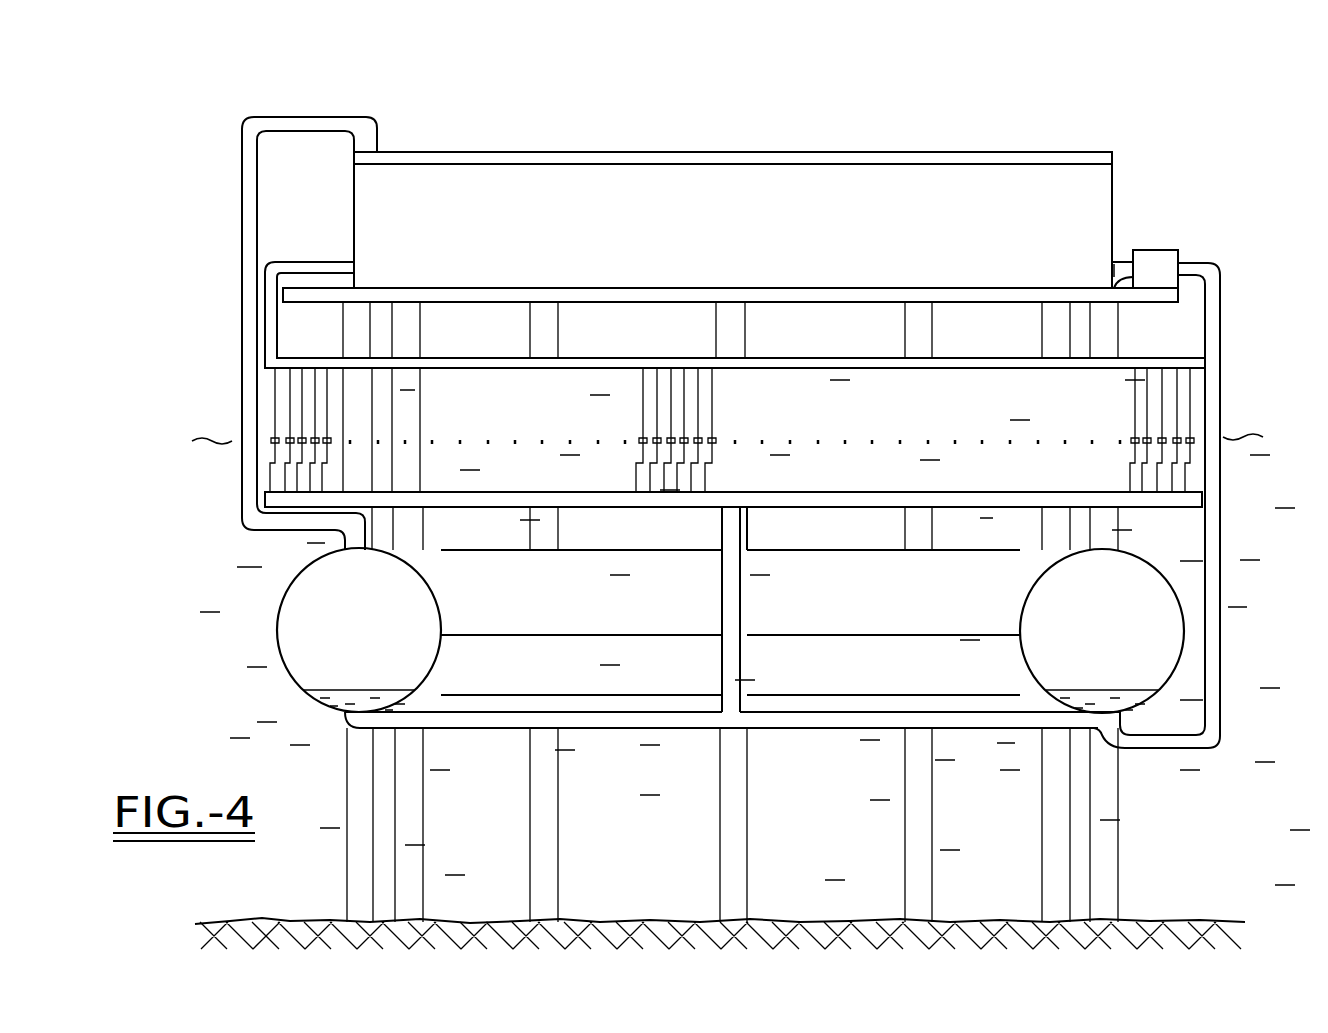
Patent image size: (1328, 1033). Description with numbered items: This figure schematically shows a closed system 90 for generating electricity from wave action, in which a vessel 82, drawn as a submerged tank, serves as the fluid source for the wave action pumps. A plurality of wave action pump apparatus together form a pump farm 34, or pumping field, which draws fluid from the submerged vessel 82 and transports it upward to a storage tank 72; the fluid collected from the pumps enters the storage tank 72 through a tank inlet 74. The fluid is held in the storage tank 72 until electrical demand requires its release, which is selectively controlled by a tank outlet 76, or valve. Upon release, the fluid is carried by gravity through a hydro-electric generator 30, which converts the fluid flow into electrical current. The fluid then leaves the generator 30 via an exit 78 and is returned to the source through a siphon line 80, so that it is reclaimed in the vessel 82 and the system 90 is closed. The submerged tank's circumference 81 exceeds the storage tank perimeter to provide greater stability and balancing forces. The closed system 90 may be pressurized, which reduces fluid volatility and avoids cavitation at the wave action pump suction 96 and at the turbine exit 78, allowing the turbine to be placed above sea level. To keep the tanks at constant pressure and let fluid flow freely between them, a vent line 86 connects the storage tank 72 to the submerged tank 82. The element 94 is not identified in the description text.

The closed system 90 is at (540, 147).
The housing 94 is at (790, 178).
The storage tank 72 is at (1113, 178).
The vent line 86 is at (243, 248).
The tank inlet 74 is at (352, 262).
The tank outlet 76 is at (1116, 268).
The hydro-electric generator 30 is at (1163, 258).
The exit 78 is at (1180, 272).
The siphon line 80 is at (1220, 430).
The pump farm 34 is at (343, 432).
The circumference 81 is at (300, 672).
The vessel 82 is at (860, 665).
The wave action pump suction 96 is at (663, 722).